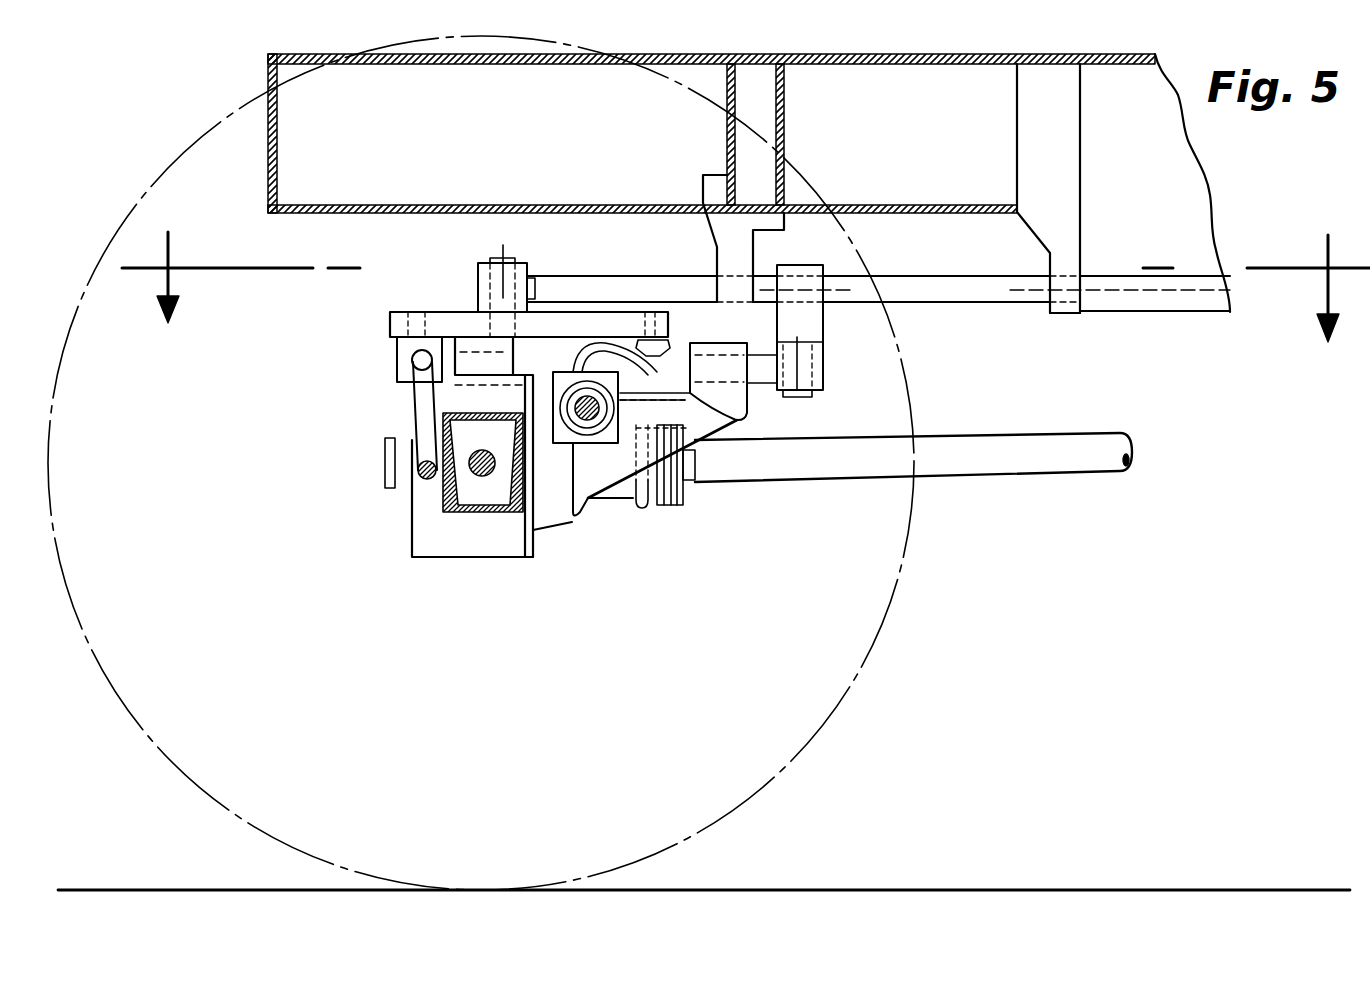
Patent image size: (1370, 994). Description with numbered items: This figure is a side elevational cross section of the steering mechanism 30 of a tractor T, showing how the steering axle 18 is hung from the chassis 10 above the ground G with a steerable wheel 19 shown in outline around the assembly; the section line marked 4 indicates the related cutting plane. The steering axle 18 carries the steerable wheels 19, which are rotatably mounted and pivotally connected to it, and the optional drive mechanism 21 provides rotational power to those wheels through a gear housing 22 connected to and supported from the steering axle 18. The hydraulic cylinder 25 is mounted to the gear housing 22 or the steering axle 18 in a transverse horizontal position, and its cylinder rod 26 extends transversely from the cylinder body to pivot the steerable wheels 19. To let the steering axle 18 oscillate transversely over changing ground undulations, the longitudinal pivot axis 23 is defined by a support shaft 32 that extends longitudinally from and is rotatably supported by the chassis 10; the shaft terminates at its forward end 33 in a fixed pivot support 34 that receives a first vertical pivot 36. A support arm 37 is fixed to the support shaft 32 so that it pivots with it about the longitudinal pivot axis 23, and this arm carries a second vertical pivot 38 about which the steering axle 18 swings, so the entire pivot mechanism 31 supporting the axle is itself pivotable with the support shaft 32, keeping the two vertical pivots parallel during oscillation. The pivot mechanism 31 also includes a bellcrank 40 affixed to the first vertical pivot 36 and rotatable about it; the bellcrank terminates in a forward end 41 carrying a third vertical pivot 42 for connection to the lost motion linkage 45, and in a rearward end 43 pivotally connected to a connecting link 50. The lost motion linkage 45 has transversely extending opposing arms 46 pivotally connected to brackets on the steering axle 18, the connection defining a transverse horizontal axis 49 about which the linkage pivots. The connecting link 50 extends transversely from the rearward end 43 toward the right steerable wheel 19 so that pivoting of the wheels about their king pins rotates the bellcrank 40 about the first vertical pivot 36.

The section line 4- 4 is at (746, 287).
The chassis 10 is at (268, 72).
The steering axle 18 is at (410, 505).
The steerable wheels 19 is at (906, 535).
The drive mechanism 21 is at (1058, 433).
The gear housing 22 is at (553, 518).
The longitudinal pivot axis 23 is at (1030, 292).
The hydraulic cylinder 25 is at (607, 445).
The cylinder rod 26 is at (590, 418).
The steering mechanism 30 is at (604, 256).
The pivot mechanism 31 is at (350, 316).
The support shaft 32 is at (913, 302).
The forward end 33 is at (574, 228).
The fixed pivot support 34 is at (477, 272).
The first vertical pivot 36 is at (498, 240).
The support arm 37 is at (824, 330).
The second vertical pivot 38 is at (797, 398).
The bellcrank 40 is at (463, 312).
The forward end 41 is at (392, 325).
The third vertical pivot 42 is at (413, 313).
The rearward end 43 is at (622, 318).
The lost motion linkage 45 is at (350, 399).
The transverse arms 46 is at (410, 420).
The transverse horizontal axis 49 is at (420, 475).
The connecting link 50 is at (740, 418).
The tractor T is at (1050, 616).
The ground G is at (1060, 888).